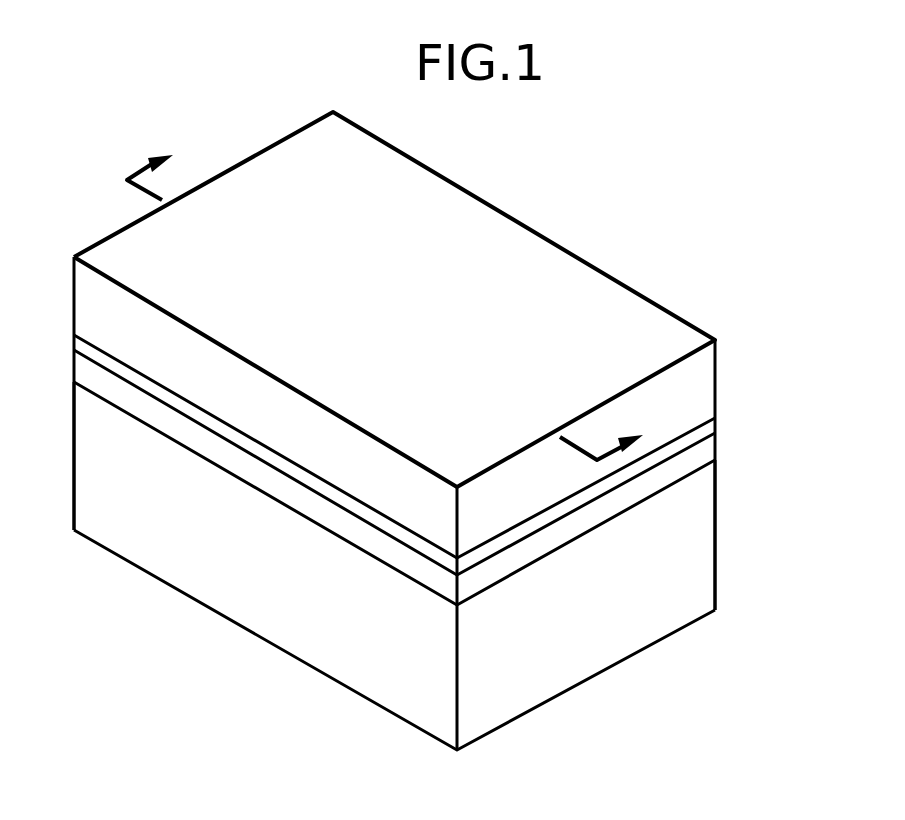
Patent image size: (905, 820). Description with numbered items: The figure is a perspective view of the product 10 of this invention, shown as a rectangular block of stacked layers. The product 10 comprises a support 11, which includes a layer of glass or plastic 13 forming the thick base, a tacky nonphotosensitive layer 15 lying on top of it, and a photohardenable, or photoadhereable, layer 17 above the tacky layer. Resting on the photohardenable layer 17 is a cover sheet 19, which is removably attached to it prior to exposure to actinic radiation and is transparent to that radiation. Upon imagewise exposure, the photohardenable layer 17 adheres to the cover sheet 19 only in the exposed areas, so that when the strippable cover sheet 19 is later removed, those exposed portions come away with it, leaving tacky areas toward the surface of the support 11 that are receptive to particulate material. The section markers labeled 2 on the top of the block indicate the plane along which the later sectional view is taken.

The product 10 is at (122, 77).
The support 11 is at (178, 593).
The layer of glass or plastic 13 is at (702, 583).
The tacky nonphotosensitive layer 15 is at (700, 450).
The photohardenable layer 17 is at (705, 428).
The cover sheet 19 is at (700, 376).
The section line 2- 2 is at (395, 297).